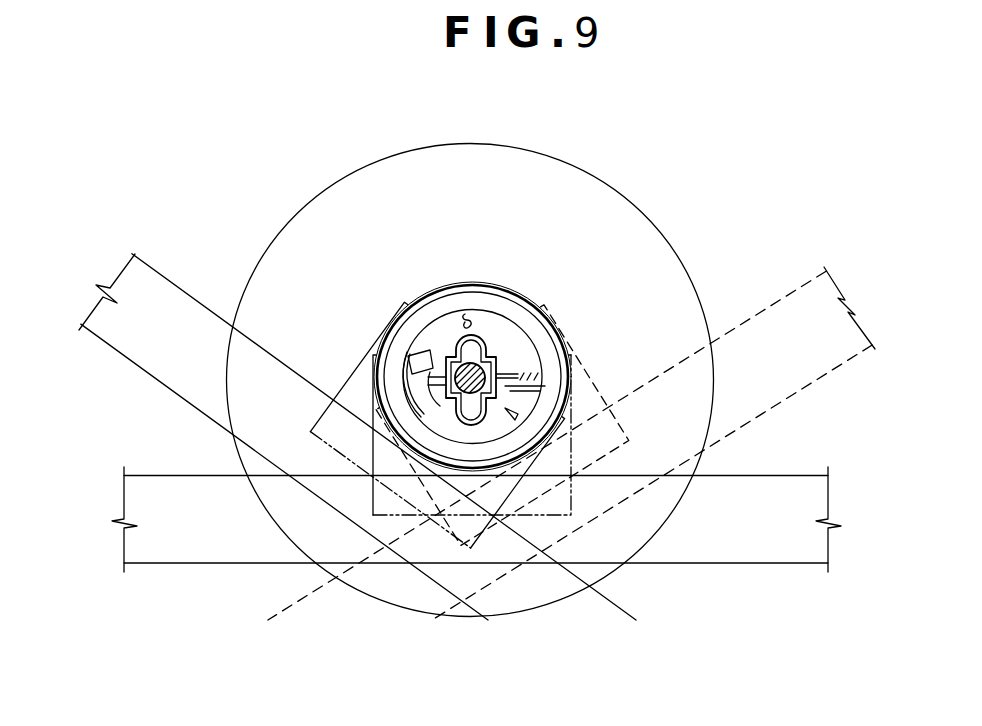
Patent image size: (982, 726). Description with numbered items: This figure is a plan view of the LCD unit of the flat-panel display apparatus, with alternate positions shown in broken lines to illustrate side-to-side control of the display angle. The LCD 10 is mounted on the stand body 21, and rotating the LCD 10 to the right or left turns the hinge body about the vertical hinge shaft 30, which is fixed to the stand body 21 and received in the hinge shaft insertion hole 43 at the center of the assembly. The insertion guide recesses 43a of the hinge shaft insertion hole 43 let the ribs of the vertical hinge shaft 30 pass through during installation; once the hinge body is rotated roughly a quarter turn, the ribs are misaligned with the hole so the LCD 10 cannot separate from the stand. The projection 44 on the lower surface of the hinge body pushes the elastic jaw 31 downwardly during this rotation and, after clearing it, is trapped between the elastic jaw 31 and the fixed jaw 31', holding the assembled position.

The stand body 21 is at (365, 197).
The LCD 10 is at (886, 425).
The elastic jaw 31 is at (382, 377).
The fixed jaw 31' is at (629, 425).
The vertical hinge shaft 30 is at (505, 377).
The hinge shaft insertion hole 43 is at (492, 360).
The insertion guide recesses 43a is at (478, 338).
The projection 44 is at (478, 314).